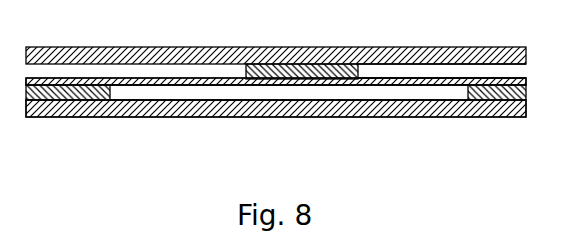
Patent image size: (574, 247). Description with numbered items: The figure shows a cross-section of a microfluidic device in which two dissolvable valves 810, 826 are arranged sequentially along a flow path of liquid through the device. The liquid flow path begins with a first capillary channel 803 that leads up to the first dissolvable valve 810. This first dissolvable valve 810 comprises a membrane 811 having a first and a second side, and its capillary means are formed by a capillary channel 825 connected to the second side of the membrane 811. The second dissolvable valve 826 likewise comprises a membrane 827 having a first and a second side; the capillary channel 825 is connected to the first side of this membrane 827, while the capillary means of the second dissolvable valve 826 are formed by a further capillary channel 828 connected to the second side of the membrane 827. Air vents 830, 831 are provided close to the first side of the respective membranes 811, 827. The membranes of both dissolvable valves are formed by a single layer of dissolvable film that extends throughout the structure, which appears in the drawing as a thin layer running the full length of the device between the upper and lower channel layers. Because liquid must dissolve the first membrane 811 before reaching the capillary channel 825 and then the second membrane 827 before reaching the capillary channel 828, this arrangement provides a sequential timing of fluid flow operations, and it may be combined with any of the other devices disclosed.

The first capillary channel 803 is at (50, 72).
The first dissolvable valve 810 is at (172, 81).
The membrane 811 is at (276, 46).
The air vent 830 is at (234, 64).
The capillary channel 825 is at (337, 88).
The capillary channel 828 is at (438, 72).
The second dissolvable valve 826 is at (405, 85).
The membrane 827 is at (276, 136).
The air vent 831 is at (453, 113).